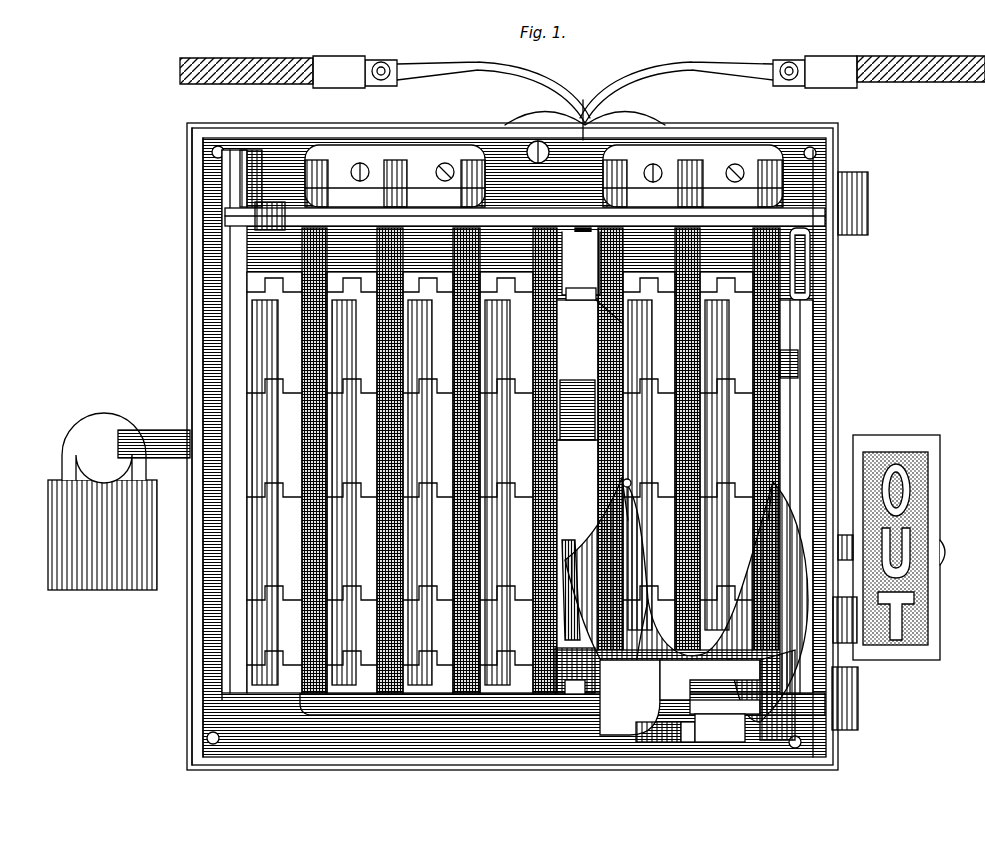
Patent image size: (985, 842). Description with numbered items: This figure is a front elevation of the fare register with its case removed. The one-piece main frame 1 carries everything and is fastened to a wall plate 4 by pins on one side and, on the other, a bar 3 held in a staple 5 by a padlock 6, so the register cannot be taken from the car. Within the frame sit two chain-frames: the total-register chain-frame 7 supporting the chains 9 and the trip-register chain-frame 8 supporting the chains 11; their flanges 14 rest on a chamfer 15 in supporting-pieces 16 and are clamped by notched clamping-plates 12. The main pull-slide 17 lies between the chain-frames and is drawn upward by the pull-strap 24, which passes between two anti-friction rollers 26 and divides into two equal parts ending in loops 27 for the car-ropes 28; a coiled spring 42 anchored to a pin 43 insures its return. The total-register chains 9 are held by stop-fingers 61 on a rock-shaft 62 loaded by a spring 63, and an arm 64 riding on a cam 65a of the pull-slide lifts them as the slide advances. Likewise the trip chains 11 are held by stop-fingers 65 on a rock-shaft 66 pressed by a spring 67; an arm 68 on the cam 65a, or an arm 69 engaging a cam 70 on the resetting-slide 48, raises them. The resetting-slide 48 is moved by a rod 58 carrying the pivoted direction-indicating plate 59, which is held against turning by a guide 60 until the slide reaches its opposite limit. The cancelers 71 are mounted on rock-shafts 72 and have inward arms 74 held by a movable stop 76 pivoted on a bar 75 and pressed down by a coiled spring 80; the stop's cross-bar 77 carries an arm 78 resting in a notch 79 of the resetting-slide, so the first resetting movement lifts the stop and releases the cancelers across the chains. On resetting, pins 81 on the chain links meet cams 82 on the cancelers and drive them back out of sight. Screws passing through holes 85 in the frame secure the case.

The main frame 1 is at (195, 318).
The bar 3 is at (170, 432).
The plate 4 is at (572, 788).
The staple 5 is at (138, 428).
The padlock 6 is at (64, 440).
The total-register chain-frame 7 is at (205, 292).
The trip-register chain-frame 8 is at (808, 412).
The total-register chains 9 is at (390, 482).
The trip-register chains 11 is at (688, 461).
The clamping-plates 12 is at (412, 145).
The flanges 14 is at (228, 620).
The chamfer 15 is at (225, 700).
The supporting-pieces 16 is at (200, 722).
The main pull-slide 17 is at (577, 475).
The pull-strap 24 is at (585, 90).
The anti-friction rollers 26 is at (583, 114).
The loops 27 is at (585, 61).
The car-ropes 28 is at (582, 62).
The coiled spring 42 is at (565, 640).
The pin 43 is at (578, 700).
The resetting-slide 48 is at (800, 460).
The rod 58 is at (842, 536).
The direction-indicating plate 59 is at (935, 596).
The guide 60 is at (858, 640).
The stop-fingers 61 is at (230, 256).
The rock-shaft 62 is at (255, 218).
The spring 63 is at (238, 160).
The arm 64 is at (575, 300).
The stop-fingers 65 is at (682, 262).
The cam 65a is at (588, 300).
The rock-shaft 66 is at (826, 216).
The spring 67 is at (828, 252).
The arm 68 is at (621, 323).
The arm 69 is at (812, 300).
The cam 70 is at (815, 360).
The cancelers 71 is at (690, 560).
The rock-shaft 72 is at (748, 788).
The arms 74 is at (665, 672).
The bar 75 is at (712, 742).
The movable stop 76 is at (725, 704).
The cross-bar 77 is at (780, 742).
The arm 78 is at (858, 700).
The notch 79 is at (688, 742).
The coiled spring 80 is at (655, 742).
The pin 81 is at (630, 480).
The cam 82 is at (630, 500).
The holes 85 is at (218, 146).